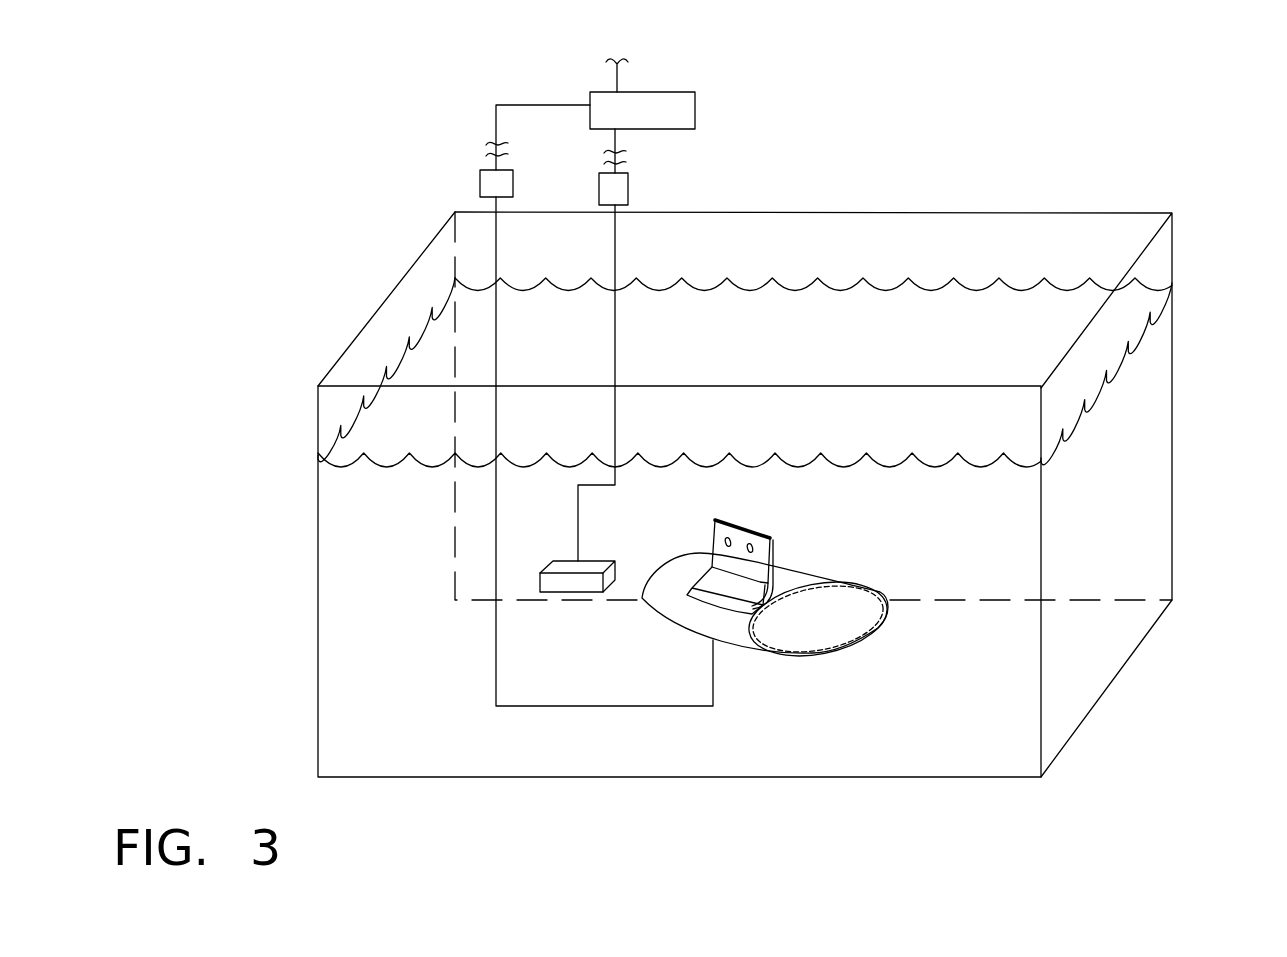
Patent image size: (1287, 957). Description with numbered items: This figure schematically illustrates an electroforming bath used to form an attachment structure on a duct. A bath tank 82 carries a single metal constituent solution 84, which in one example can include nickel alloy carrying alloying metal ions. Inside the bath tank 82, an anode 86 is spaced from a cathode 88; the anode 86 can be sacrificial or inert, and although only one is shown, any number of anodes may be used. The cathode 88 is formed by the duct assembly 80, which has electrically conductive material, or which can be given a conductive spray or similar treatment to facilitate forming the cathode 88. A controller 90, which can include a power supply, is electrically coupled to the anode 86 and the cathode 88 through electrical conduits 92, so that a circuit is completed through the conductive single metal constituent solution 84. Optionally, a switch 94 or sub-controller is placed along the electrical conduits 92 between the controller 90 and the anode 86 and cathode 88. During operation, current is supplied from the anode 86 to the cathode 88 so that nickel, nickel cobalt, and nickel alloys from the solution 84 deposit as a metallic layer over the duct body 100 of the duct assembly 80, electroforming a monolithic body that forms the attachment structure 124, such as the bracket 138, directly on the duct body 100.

The duct assembly 80 is at (848, 552).
The bath tank 82 is at (1173, 413).
The single metal constituent solution 84 is at (1148, 338).
The anode 86 is at (605, 562).
The cathode 88 is at (795, 637).
The controller 90 is at (676, 92).
The electrical conduits 92 is at (496, 250).
The switch 94 is at (480, 183).
The duct body 100 is at (873, 638).
The attachment structure 124 is at (775, 535).
The bracket 138 is at (739, 522).